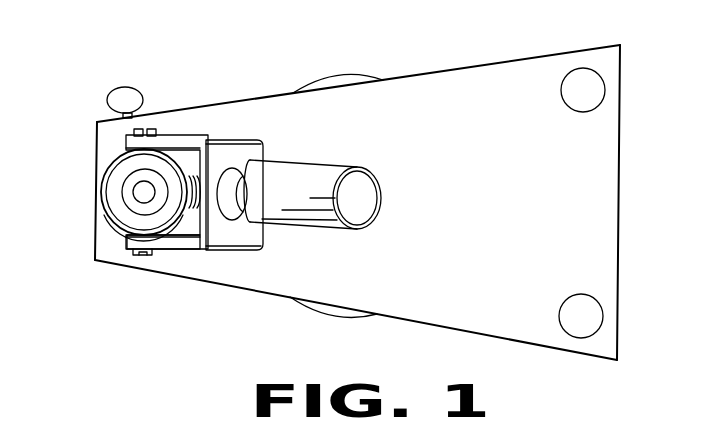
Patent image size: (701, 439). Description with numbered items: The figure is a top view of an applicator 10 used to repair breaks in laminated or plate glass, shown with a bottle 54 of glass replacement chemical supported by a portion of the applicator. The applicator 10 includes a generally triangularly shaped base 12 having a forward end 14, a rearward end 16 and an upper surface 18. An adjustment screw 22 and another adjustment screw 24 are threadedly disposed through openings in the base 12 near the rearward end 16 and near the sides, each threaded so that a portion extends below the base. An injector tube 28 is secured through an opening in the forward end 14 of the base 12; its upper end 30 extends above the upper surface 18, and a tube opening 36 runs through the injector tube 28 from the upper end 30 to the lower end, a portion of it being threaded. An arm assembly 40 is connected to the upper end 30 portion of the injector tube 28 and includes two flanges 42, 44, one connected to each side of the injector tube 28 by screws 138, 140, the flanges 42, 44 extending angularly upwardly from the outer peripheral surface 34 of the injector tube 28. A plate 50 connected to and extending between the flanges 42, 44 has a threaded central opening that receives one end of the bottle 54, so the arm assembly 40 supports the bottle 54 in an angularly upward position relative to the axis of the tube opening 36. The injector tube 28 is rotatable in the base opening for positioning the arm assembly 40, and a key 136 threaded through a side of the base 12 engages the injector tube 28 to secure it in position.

The applicator 10 is at (398, 62).
The base 12 is at (351, 191).
The forward end 14 is at (93, 253).
The rearward end 16 is at (618, 190).
The upper surface 18 is at (473, 313).
The adjustment screw 22 is at (592, 97).
The adjustment screw 24 is at (583, 318).
The injector tube 28 is at (103, 200).
The upper end 30 is at (117, 182).
The outer peripheral surface 34 is at (108, 220).
The tube opening 36 is at (135, 180).
The arm assembly 40 is at (205, 128).
The flange 42 is at (165, 140).
The flange 44 is at (167, 243).
The plate 50 is at (265, 163).
The bottle 54 is at (325, 178).
The key 136 is at (123, 92).
The screw 138 is at (133, 130).
The screw 140 is at (135, 253).